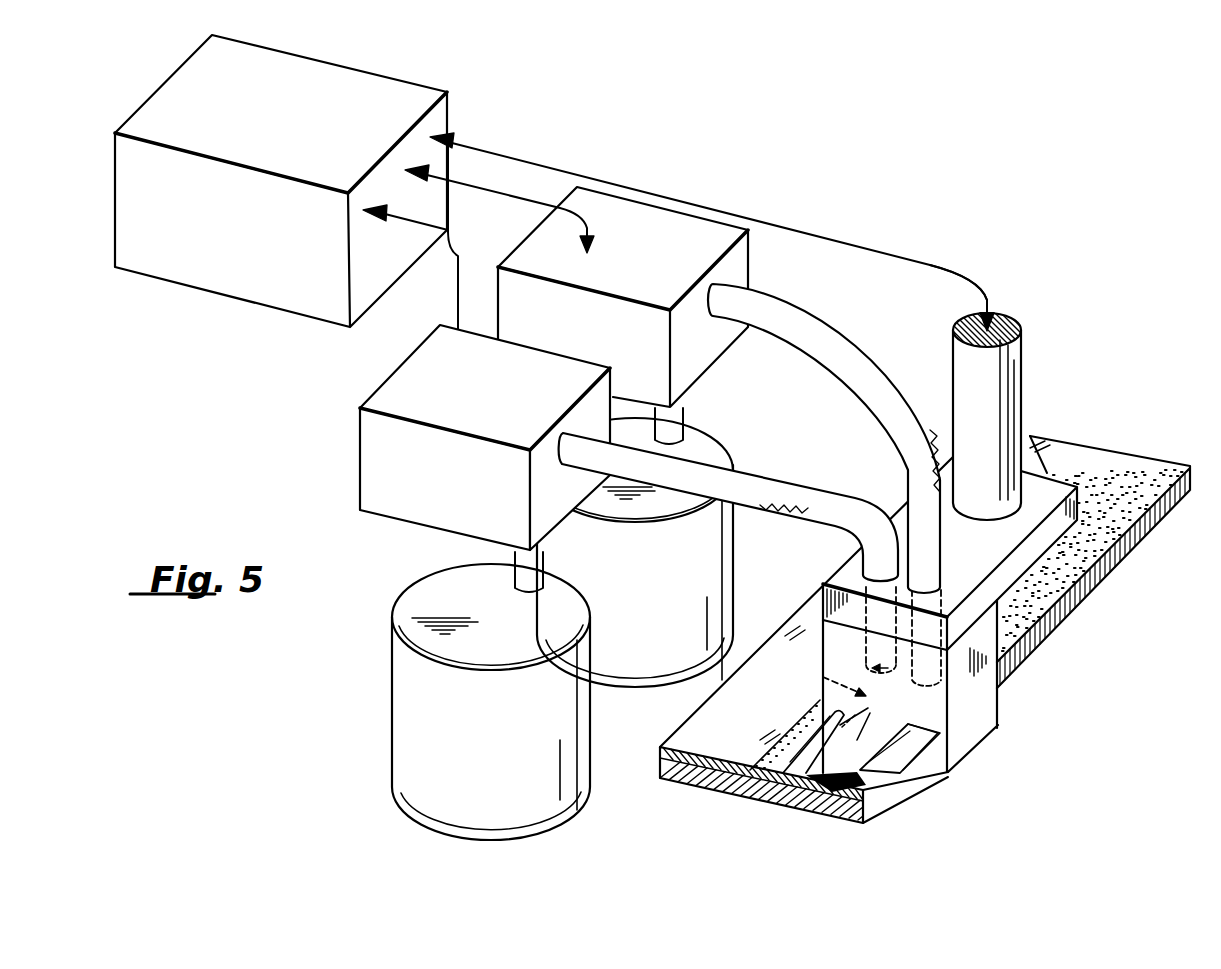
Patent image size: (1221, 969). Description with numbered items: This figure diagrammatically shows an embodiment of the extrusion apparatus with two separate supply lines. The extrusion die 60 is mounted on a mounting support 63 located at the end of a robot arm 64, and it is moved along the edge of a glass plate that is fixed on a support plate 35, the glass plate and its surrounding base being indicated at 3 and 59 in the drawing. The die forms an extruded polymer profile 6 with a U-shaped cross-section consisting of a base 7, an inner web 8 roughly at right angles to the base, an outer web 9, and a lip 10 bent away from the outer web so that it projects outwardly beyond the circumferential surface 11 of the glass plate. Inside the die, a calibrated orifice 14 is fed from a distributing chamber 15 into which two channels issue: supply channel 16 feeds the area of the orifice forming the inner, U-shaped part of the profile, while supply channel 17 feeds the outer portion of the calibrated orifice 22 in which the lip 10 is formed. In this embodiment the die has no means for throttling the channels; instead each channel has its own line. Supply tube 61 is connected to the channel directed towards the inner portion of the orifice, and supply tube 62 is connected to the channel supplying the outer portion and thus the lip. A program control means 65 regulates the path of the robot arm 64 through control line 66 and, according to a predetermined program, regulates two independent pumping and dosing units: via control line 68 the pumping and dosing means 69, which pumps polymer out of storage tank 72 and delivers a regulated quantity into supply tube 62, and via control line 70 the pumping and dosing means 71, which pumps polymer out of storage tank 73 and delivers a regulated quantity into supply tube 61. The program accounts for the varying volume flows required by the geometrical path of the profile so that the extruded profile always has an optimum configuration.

The layer 3 is at (1131, 463).
The extruded polymer profile 6 is at (800, 735).
The base 7 is at (817, 795).
The inner web 8 is at (800, 760).
The outer web 9 is at (855, 775).
The lip 10 is at (904, 768).
The circumferential surface 11 is at (1128, 542).
The calibrated orifice 14 is at (867, 715).
The distributing chamber 15 is at (823, 677).
The supply channel 16 is at (868, 630).
The supply channel 17 is at (940, 688).
The calibrated orifice 22 is at (947, 767).
The support plate 35 is at (705, 803).
The support plate 59 is at (798, 613).
The extrusion die 60 is at (985, 762).
The supply tube 61 is at (828, 507).
The supply tube 62 is at (780, 313).
The mounting support 63 is at (1033, 550).
The robot arm 64 is at (1013, 370).
The program control means 65 is at (228, 280).
The control line 66 is at (562, 166).
The control line 68 is at (497, 192).
The pumping and dosing means 69 is at (533, 242).
The control line 70 is at (457, 283).
The pumping and dosing means 71 is at (363, 461).
The storage tank 72 is at (737, 538).
The storage tank 73 is at (393, 737).